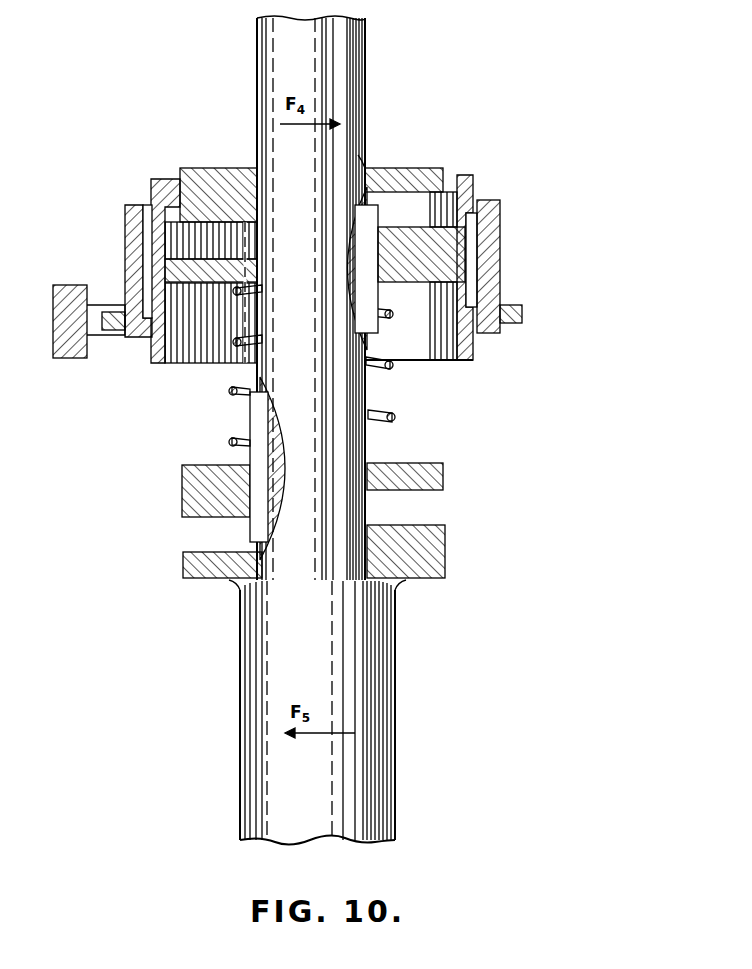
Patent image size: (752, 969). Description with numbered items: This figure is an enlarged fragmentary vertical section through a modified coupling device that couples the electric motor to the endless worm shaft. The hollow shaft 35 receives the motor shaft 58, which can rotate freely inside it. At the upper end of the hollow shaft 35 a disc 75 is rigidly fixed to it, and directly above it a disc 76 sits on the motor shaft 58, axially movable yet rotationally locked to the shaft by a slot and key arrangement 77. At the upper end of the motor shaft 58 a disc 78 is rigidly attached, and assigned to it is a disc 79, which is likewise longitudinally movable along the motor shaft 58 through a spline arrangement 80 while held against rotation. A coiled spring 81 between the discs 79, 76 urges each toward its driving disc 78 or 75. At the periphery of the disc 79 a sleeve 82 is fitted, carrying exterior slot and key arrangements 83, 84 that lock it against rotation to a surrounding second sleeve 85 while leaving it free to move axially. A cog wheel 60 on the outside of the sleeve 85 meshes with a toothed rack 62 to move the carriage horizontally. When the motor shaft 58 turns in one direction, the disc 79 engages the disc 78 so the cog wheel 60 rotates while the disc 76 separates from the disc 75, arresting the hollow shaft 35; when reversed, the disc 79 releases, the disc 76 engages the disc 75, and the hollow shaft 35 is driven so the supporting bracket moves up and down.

The hollow shaft 35 is at (364, 667).
The motor shaft 58 is at (275, 86).
The cog wheel 60 is at (510, 317).
The toothed rack 62 is at (75, 347).
The disc 75 is at (430, 552).
The disc 76 is at (432, 478).
The slot and key arrangement 77 is at (258, 420).
The disc 78 is at (378, 168).
The disc 79 is at (398, 267).
The spline arrangement 80 is at (368, 223).
The coiled spring 81 is at (375, 413).
The sleeve 82 is at (210, 350).
The slot and key arrangement 83 is at (148, 246).
The slot and key arrangement 84 is at (470, 236).
The second sleeve 85 is at (493, 278).